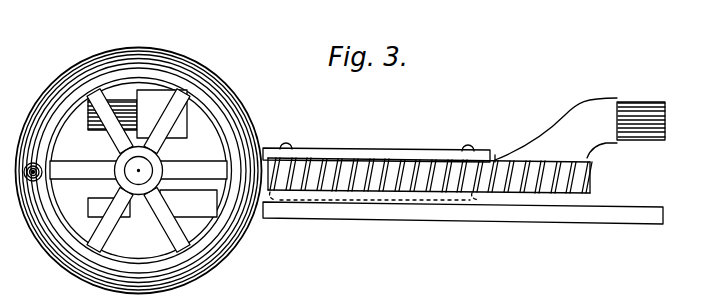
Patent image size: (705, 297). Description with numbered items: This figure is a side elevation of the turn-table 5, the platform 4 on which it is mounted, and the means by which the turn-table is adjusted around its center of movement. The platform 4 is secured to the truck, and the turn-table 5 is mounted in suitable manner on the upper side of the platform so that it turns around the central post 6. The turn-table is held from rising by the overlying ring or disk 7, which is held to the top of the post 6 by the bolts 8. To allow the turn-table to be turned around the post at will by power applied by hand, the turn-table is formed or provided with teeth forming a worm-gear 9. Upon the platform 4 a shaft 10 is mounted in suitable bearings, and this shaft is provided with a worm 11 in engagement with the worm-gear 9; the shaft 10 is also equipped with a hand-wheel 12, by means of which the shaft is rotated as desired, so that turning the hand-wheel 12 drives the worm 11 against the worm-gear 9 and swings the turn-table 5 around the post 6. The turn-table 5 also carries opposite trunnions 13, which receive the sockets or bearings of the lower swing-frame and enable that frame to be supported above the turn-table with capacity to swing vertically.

The platform 4 is at (652, 207).
The turn-table 5 is at (496, 158).
The central post 6 is at (478, 194).
The overlying ring or disk 7 is at (403, 150).
The bolts 8 is at (287, 145).
The worm-gear 9 is at (591, 173).
The shaft 10 is at (137, 171).
The worm 11 is at (115, 158).
The hand-wheel 12 is at (82, 67).
The trunnions 13 is at (123, 100).